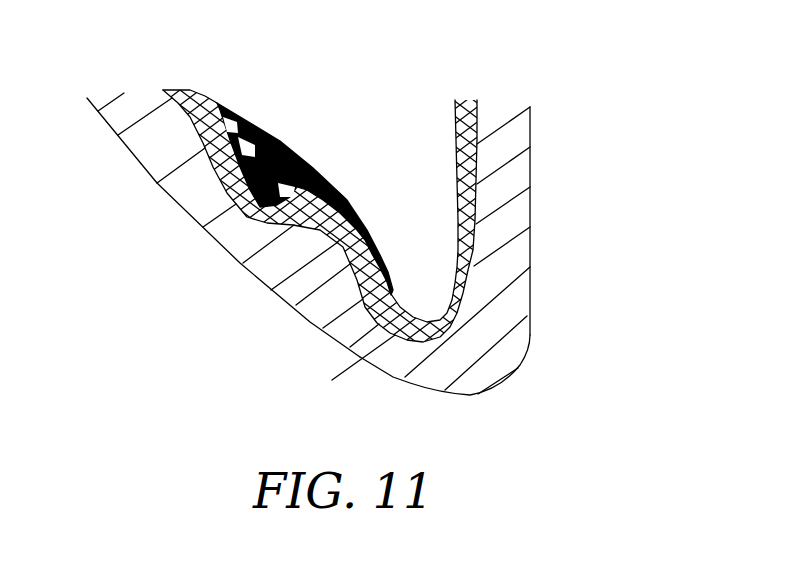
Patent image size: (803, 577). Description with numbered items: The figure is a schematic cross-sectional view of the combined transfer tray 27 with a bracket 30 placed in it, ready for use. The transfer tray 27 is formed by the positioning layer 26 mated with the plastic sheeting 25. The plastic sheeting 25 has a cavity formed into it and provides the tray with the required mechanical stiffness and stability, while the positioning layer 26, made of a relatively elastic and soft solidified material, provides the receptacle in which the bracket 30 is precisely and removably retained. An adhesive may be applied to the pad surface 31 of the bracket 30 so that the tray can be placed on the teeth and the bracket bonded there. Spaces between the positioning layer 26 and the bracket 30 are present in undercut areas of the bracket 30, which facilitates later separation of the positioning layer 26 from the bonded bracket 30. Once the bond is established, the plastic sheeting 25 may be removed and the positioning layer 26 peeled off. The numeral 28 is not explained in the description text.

The plastic sheeting 25 is at (510, 302).
The positioning layer 26 is at (470, 176).
The transfer tray 27 is at (437, 373).
The outer surface 28 is at (243, 261).
The bracket 30 is at (303, 163).
The pad surface 31 is at (368, 203).